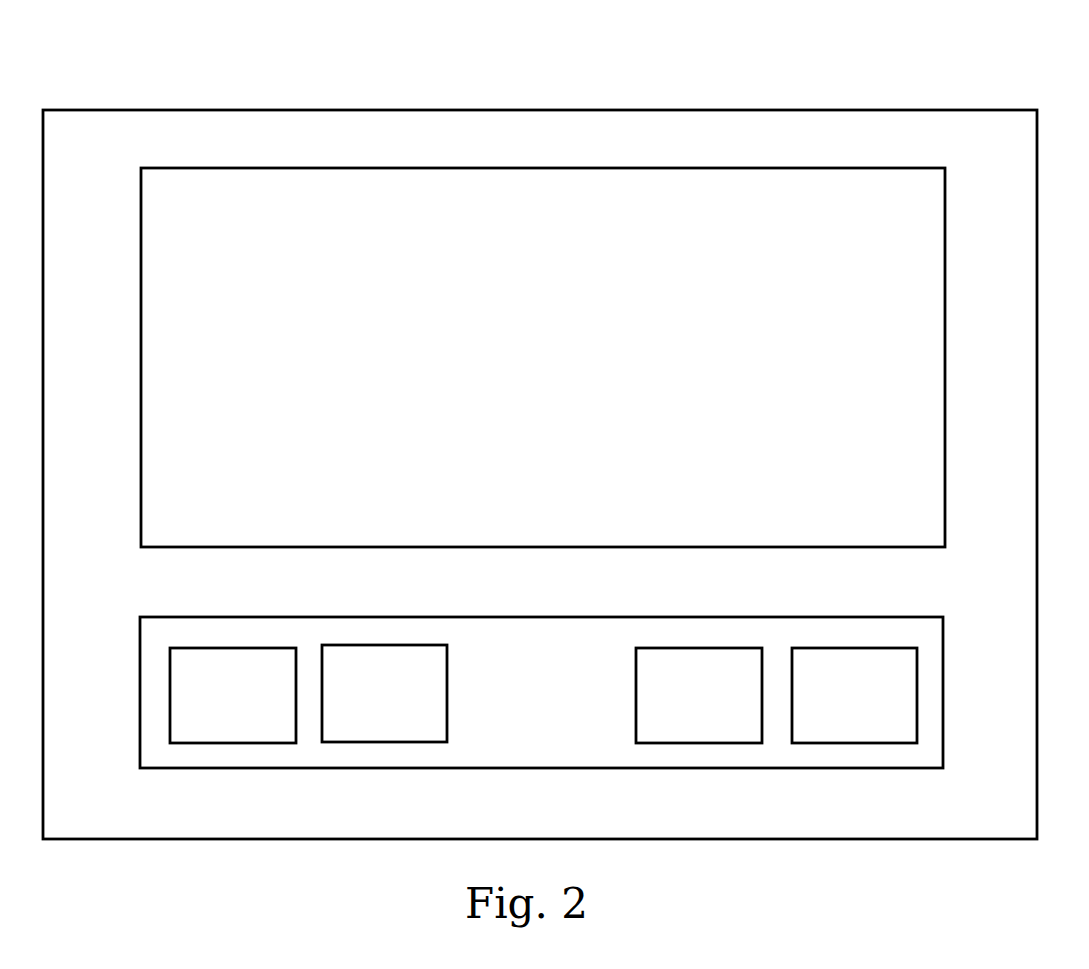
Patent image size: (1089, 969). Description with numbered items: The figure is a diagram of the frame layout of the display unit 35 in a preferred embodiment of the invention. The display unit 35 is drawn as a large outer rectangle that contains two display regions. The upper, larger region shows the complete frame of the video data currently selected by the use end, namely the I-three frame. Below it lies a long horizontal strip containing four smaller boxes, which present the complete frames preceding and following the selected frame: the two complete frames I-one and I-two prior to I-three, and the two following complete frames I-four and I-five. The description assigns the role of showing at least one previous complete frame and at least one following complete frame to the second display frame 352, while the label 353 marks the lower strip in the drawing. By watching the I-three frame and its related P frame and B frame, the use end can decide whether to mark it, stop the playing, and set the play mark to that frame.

The display unit 35 is at (762, 110).
The second display frame 352 is at (945, 313).
The thumbnail image display area 353 is at (944, 663).